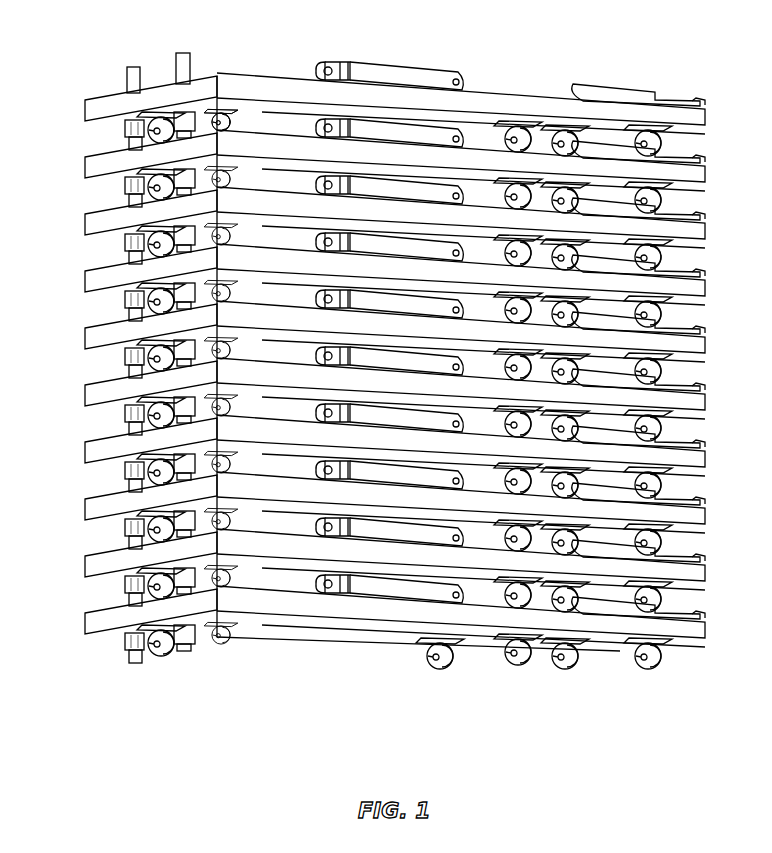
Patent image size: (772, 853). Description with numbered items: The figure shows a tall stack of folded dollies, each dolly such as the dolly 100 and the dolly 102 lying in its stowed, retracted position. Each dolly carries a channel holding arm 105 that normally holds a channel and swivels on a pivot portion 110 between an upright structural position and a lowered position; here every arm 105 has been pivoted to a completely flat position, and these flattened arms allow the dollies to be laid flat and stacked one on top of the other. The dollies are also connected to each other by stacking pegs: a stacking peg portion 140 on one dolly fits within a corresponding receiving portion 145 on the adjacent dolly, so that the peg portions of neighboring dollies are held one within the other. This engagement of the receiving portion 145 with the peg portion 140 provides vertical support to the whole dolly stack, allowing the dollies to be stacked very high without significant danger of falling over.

The dolly 100 is at (90, 110).
The dolly 102 is at (90, 167).
The channel holding arm 105 is at (265, 125).
The pivot portion 110 is at (218, 108).
The stacking peg portion 140 is at (133, 145).
The receiving portion 145 is at (128, 120).